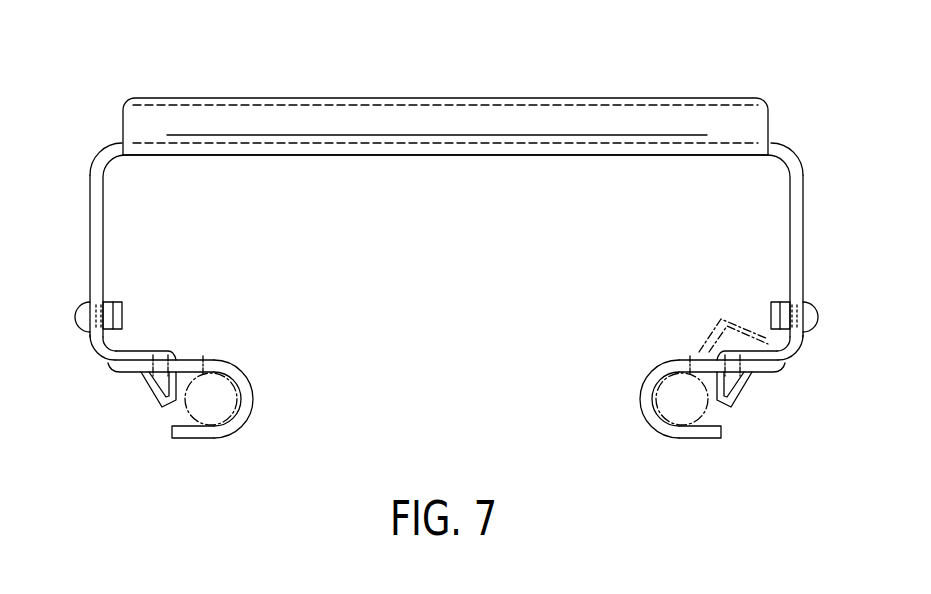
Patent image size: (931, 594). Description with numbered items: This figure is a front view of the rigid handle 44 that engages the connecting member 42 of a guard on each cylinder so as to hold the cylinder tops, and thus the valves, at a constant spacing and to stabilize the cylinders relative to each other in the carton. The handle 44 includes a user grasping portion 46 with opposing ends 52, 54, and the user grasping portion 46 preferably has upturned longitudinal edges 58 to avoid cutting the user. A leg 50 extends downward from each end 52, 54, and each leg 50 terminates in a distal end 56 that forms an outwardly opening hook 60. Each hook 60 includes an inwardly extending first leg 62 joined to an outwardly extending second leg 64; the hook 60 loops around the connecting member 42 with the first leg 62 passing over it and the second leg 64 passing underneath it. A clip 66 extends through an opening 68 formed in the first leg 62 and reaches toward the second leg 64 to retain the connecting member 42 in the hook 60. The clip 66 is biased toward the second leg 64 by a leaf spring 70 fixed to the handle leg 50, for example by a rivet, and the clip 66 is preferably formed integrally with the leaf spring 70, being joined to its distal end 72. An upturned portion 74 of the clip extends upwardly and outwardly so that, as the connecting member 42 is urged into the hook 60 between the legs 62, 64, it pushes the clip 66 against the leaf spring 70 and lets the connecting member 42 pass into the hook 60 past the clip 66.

The connecting member 42 is at (237, 384).
The rigid handle 44 is at (565, 66).
The user grasping portion 46 is at (447, 155).
The leg 50 is at (100, 240).
The end 52 is at (771, 138).
The end 54 is at (117, 143).
The distal end 56 is at (103, 360).
The upturned longitudinal edges 58 is at (318, 98).
The hook 60 is at (263, 354).
The first leg 62 is at (137, 370).
The second leg 64 is at (193, 433).
The clip 66 is at (140, 382).
The opening 68 is at (213, 358).
The leaf spring 70 is at (123, 347).
The distal end 72 is at (163, 347).
The upturned portion 74 is at (152, 395).